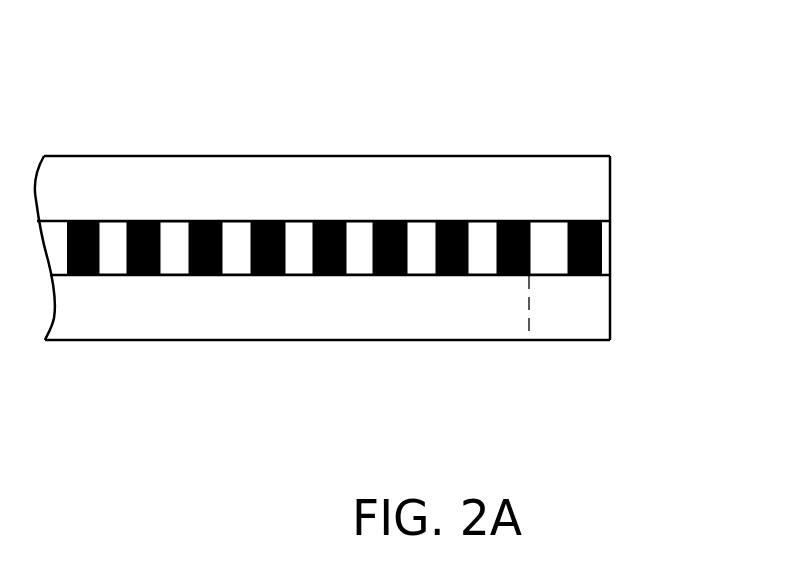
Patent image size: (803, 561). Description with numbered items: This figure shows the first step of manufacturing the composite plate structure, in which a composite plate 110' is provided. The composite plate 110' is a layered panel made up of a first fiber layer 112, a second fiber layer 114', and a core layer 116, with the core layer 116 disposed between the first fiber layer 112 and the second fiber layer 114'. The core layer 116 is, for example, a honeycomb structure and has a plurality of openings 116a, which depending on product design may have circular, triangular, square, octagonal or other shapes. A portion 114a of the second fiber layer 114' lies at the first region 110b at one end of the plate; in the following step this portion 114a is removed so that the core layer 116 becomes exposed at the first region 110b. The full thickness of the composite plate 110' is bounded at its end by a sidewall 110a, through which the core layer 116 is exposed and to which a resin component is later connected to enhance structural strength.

The composite plate 110' is at (191, 193).
The first fiber layer 112 is at (238, 182).
The core layer 116 is at (269, 221).
The openings 116a is at (117, 245).
The second fiber layer 114' is at (327, 219).
The portion of the second fiber layer 114a is at (547, 309).
The sidewall 110a is at (616, 156).
The first region 110b is at (612, 344).